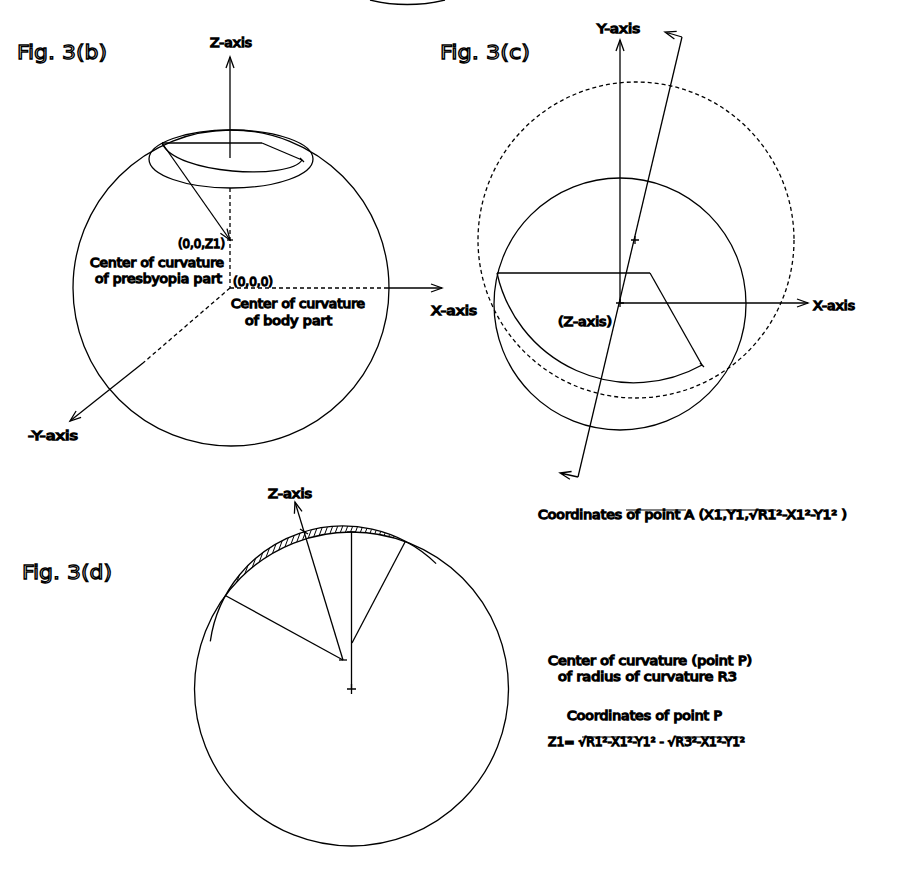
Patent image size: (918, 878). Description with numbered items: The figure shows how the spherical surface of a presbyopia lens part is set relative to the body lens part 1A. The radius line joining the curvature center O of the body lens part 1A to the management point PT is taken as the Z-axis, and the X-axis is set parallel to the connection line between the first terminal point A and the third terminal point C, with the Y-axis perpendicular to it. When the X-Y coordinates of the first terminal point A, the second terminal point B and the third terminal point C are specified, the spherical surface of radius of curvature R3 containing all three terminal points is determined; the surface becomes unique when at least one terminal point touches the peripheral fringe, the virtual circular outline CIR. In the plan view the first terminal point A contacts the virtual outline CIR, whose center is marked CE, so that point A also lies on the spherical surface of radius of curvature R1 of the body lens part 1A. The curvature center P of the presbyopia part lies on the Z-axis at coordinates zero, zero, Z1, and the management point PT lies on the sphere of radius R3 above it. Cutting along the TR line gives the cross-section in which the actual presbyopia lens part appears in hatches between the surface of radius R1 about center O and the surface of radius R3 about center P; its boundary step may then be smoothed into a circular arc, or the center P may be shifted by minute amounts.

In FIG. 3C, the body lens part 1A is at (636, 240).
In FIG. 3B, the virtual circular outline CIR is at (231, 161).
In FIG. 3C, the virtual circular outline CIR is at (620, 304).
In FIG. 3C, the center of presbyopia part circle CE is at (645, 243).
In FIG. 3D, the center of presbyopia part circle CE is at (351, 526).
In FIG. 3B, the management point PT is at (232, 157).
In FIG. 3C, the management point PT is at (609, 304).
In FIG. 3D, the management point PT is at (295, 536).
In FIG. 3C, the TR-TR line TR is at (624, 261).
In FIG. 3D, the radius of curvature of body lens part R1 is at (352, 610).
In FIG. 3B, the radius of curvature of presbyopia lens part R3 is at (196, 191).
In FIG. 3D, the radius of curvature of presbyopia lens part R3 is at (323, 590).
In FIG. 3B, the curvature center of presbyopia lens part P is at (236, 242).
In FIG. 3D, the curvature center of presbyopia lens part P is at (337, 670).
In FIG. 3D, the curvature center of body lens part O is at (352, 699).
In FIG. 3B, the first terminal point A is at (205, 137).
In FIG. 3C, the first terminal point A is at (594, 322).
In FIG. 3B, the second terminal point B is at (301, 158).
In FIG. 3C, the second terminal point B is at (707, 368).
In FIG. 3B, the third terminal point C is at (279, 145).
In FIG. 3C, the third terminal point C is at (676, 314).